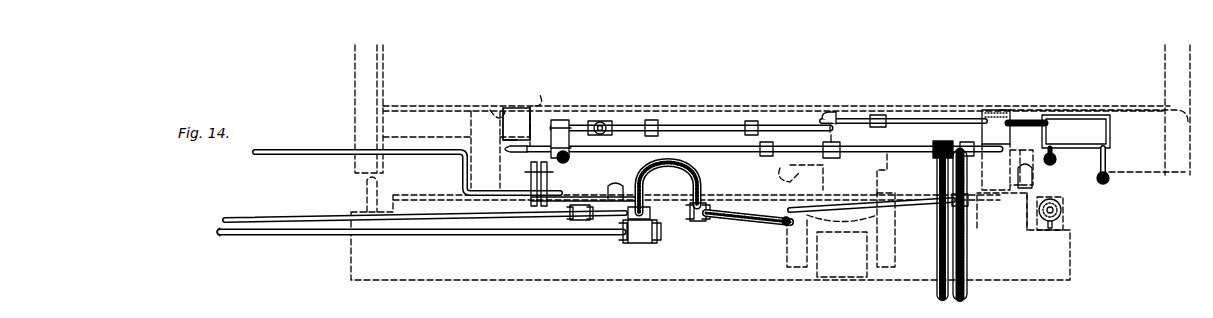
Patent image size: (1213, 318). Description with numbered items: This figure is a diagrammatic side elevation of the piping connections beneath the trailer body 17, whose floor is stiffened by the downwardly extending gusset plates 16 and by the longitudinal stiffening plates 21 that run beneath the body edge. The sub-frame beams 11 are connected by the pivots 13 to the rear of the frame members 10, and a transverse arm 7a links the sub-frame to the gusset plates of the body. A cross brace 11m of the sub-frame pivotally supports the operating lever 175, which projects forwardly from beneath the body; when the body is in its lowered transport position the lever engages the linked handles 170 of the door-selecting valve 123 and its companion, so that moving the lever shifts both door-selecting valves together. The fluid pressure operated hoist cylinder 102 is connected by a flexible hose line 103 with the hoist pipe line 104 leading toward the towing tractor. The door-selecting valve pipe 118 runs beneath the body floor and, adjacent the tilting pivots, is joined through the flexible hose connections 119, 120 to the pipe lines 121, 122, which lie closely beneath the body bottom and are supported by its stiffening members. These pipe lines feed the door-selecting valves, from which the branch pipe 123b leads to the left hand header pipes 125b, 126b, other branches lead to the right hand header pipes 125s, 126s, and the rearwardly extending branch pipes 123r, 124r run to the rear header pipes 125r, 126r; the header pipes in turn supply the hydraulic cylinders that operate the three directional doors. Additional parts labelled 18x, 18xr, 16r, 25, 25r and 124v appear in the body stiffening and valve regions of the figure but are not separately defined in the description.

The body 17 is at (425, 106).
The frame members 10 is at (495, 278).
The gusset plates 16 is at (540, 108).
The bracket 18x is at (498, 112).
The support block 25 is at (516, 124).
The operating lever 175 is at (333, 150).
The valve 124v is at (600, 120).
The right hand header pipe 125s is at (651, 120).
The left hand header pipe 125b is at (692, 145).
The left hand header pipe 126b is at (747, 121).
The pipe line 121 is at (790, 125).
The rearwardly extending branch pipe 123r is at (913, 125).
The pipe line 122 is at (722, 152).
The fluid pressure operated hoist cylinder 102 is at (782, 172).
The door-selecting valve 123 is at (565, 160).
The branch pipe 123b is at (578, 158).
The handles 170 is at (548, 184).
The cross brace 11m is at (585, 189).
The rearwardly extending branch pipe 124r is at (1026, 120).
The support block 25r is at (1076, 131).
The rear header pipe 126r is at (1075, 175).
The rear header pipe 125r is at (1108, 182).
The frame member 16r is at (1130, 172).
The bracket 18xr is at (1007, 167).
The right hand header pipe 126s is at (920, 150).
The sub-frame beams 11 is at (935, 183).
The stiffening plates 21 is at (1183, 72).
The flexible hose connection 120 is at (937, 249).
The flexible hose connection 119 is at (968, 252).
The door-selecting valve pipe 118 is at (291, 216).
The hoist pipe line 104 is at (312, 238).
The flexible hose line 103 is at (740, 224).
The wall 7a is at (1010, 215).
The pivots 13 is at (1047, 222).